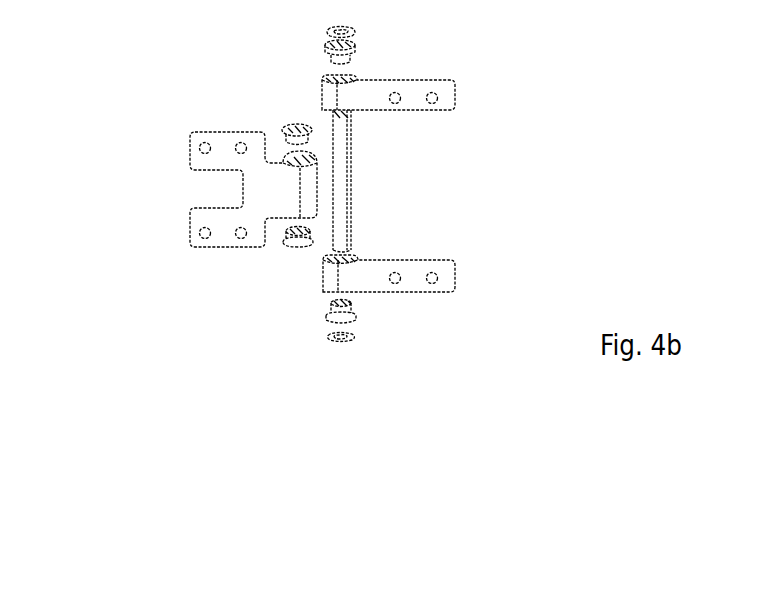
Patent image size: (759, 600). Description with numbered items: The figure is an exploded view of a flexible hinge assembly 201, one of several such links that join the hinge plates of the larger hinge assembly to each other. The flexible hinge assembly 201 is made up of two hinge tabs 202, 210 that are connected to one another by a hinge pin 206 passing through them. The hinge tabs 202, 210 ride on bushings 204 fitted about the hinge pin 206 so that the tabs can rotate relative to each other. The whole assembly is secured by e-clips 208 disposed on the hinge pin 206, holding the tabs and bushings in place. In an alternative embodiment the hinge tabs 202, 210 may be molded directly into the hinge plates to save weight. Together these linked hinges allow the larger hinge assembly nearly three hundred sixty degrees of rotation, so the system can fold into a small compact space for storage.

The flexible hinge assembly 201 is at (626, 98).
The hinge tab 202 is at (218, 250).
The bushing 204 is at (287, 107).
The hinge pin 206 is at (355, 180).
The e-clip 208 is at (365, 337).
The hinge tab 210 is at (467, 278).